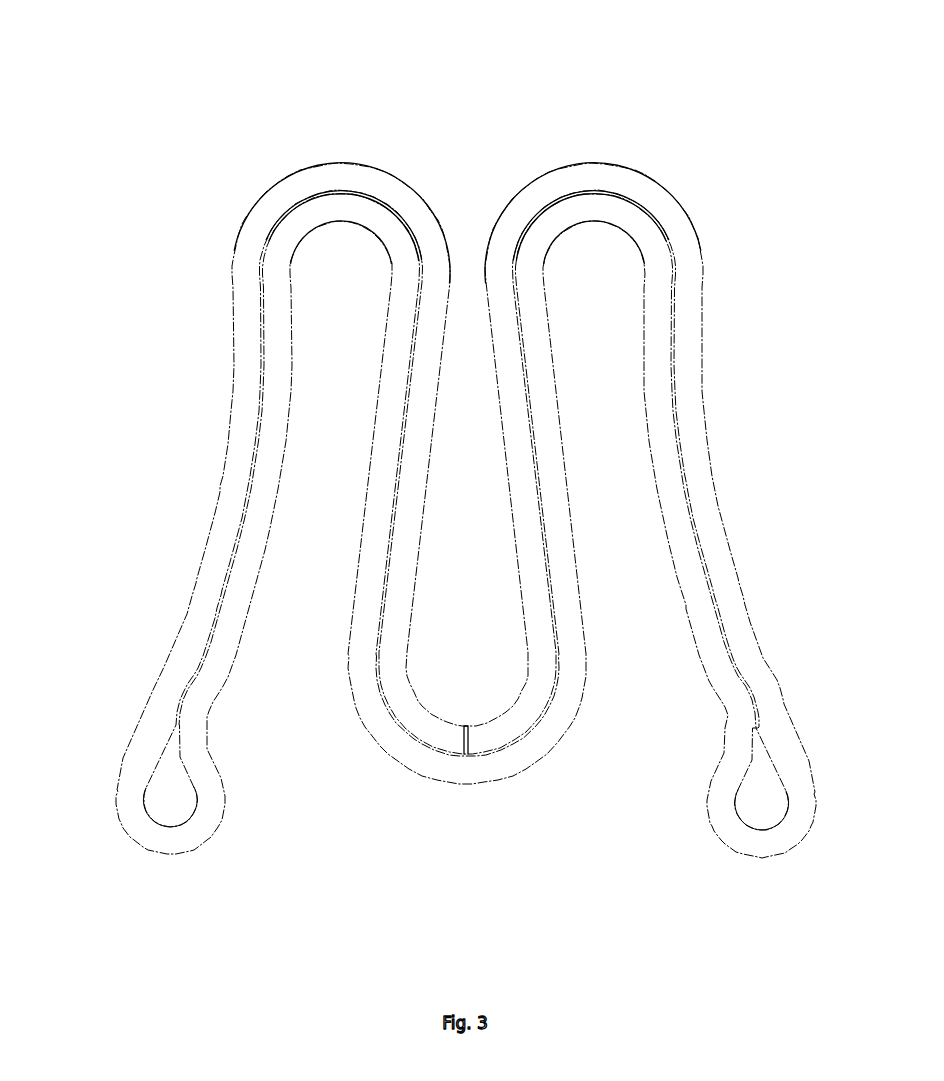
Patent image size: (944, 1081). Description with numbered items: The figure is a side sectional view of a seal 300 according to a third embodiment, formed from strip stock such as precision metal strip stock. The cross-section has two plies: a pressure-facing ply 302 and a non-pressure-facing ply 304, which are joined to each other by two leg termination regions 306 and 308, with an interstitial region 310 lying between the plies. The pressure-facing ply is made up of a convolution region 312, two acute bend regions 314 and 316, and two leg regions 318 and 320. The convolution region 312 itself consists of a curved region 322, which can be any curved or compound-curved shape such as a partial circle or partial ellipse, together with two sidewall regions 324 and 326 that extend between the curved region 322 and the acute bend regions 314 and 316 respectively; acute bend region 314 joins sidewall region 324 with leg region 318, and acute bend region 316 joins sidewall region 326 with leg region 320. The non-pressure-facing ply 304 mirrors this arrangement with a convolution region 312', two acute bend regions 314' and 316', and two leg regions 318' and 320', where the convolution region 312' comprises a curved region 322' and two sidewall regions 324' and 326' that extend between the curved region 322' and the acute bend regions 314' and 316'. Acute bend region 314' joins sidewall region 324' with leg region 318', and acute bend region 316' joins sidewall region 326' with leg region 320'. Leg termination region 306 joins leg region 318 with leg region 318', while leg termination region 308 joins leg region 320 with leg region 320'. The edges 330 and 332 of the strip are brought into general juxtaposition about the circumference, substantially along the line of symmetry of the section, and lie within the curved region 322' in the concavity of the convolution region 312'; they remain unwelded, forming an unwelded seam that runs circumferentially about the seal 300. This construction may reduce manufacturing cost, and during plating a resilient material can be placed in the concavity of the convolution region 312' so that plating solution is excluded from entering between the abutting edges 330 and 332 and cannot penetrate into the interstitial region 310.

The seal 300 is at (758, 175).
The pressure-facing ply 302 is at (193, 713).
The non-pressure-facing ply 304 is at (160, 707).
The leg termination region 306 is at (195, 830).
The leg termination region 308 is at (740, 831).
The interstitial region 310 is at (772, 805).
The convolution region 312 is at (630, 799).
The convolution region 312' is at (469, 110).
The acute bend region 314 is at (341, 262).
The acute bend region 314' is at (342, 183).
The acute bend region 316 is at (594, 262).
The acute bend region 316' is at (593, 183).
The leg region 318 is at (280, 503).
The leg region 318' is at (144, 486).
The leg region 320 is at (656, 503).
The leg region 320' is at (785, 485).
The curved region 322 is at (466, 807).
The curved region 322' is at (465, 678).
The sidewall region 324 is at (347, 487).
The sidewall region 324' is at (443, 484).
The sidewall region 326 is at (586, 487).
The sidewall region 326' is at (485, 485).
The edge 330 is at (463, 748).
The edge 332 is at (468, 736).